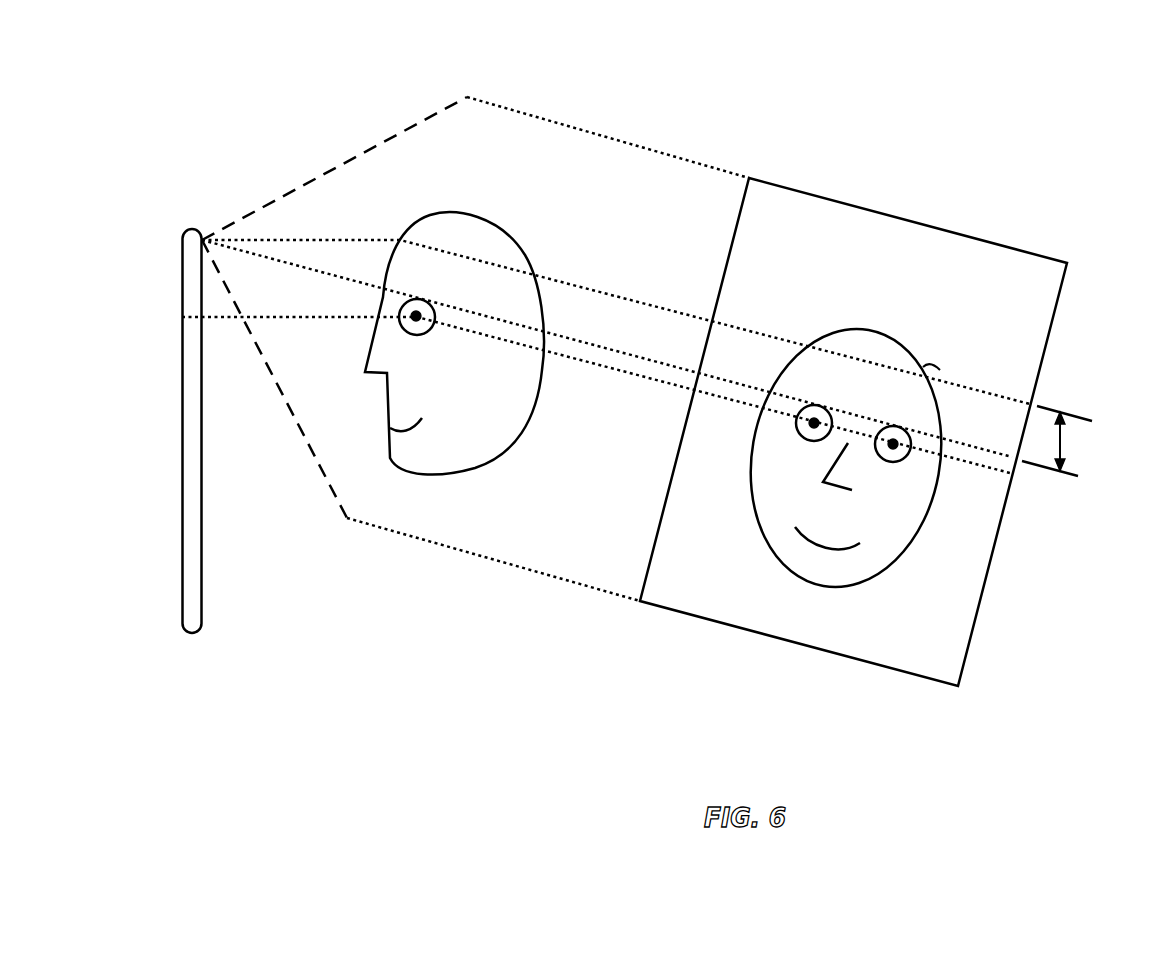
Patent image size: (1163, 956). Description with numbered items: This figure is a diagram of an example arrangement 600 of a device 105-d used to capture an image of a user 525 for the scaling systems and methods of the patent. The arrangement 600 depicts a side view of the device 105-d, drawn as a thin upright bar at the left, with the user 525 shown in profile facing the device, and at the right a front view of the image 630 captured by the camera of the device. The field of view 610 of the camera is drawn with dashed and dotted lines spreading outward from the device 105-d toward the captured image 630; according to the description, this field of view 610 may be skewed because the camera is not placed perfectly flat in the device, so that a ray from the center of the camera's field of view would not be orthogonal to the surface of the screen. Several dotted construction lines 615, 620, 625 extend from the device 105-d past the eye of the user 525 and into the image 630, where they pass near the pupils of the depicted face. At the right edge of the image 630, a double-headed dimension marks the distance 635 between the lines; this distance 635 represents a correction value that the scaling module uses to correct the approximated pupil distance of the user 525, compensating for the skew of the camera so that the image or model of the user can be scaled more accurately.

The device 105-d is at (203, 568).
The arrangement 600 is at (297, 105).
The field of view 610 is at (355, 157).
The line from camera to eye 615 is at (300, 267).
The horizontal eye line 620 is at (283, 318).
The horizontal camera line 625 is at (333, 240).
The user 525 is at (468, 213).
The image 630 is at (977, 272).
The distance 635 is at (1075, 458).